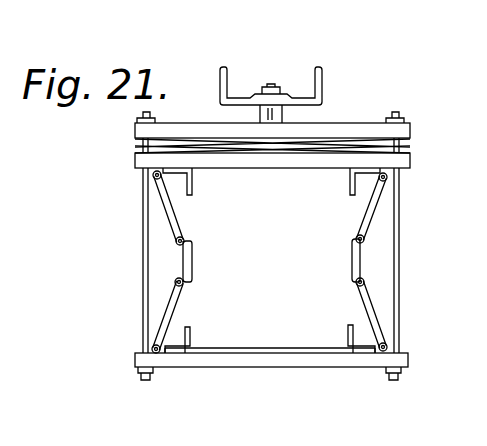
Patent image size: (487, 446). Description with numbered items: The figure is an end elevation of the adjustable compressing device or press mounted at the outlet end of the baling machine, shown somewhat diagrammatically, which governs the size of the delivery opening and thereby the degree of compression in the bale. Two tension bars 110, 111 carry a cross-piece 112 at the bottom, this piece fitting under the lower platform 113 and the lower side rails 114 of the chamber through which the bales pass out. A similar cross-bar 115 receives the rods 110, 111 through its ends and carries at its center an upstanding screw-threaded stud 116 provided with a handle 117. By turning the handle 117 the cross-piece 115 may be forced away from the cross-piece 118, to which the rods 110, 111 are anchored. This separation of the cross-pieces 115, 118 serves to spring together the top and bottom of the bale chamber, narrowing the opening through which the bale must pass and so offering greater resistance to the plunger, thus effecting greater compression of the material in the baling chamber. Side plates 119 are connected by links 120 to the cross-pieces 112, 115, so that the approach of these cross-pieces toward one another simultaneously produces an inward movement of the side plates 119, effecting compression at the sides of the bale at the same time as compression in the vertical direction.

The tension bar 110 is at (142, 245).
The tension bar 111 is at (403, 257).
The cross-piece 112 is at (282, 363).
The lower platform 113 is at (253, 350).
The lower side rails 114 is at (190, 340).
The cross-bar 115 is at (288, 161).
The screw-threaded stud 116 is at (277, 87).
The handle 117 is at (323, 95).
The cross-piece 118 is at (302, 132).
The side plates 119 is at (194, 256).
The links 120 is at (175, 216).